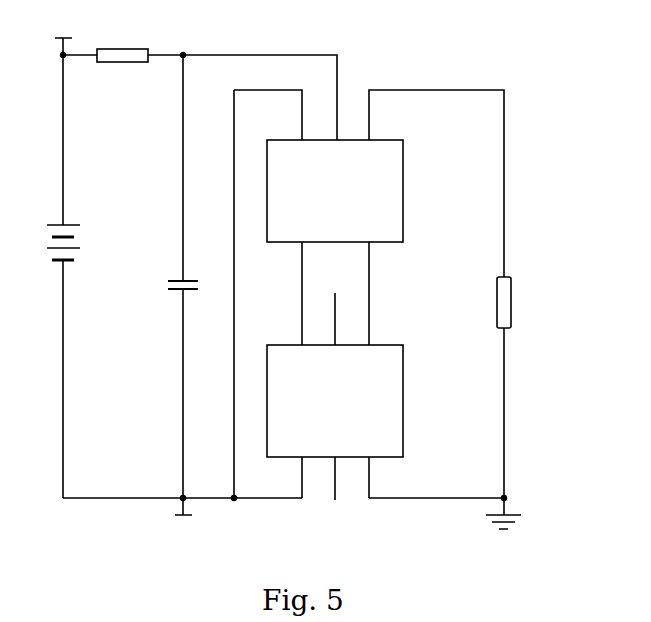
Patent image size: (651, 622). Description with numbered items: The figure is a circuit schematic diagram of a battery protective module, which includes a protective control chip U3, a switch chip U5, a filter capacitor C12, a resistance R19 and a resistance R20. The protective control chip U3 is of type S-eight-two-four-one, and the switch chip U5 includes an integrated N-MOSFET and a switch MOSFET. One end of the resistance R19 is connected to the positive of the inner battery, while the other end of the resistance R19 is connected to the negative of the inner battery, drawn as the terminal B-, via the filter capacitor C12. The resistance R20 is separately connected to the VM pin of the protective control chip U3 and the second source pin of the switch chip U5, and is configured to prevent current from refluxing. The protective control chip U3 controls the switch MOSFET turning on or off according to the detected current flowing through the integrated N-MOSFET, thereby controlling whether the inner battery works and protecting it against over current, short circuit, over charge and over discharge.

The resistance R19 is at (122, 41).
The resistance R20 is at (531, 301).
The filter capacitor C12 is at (152, 289).
The protective control chip U3 is at (359, 190).
The switch chip U5 is at (358, 399).
The battery negative terminal B- is at (178, 533).